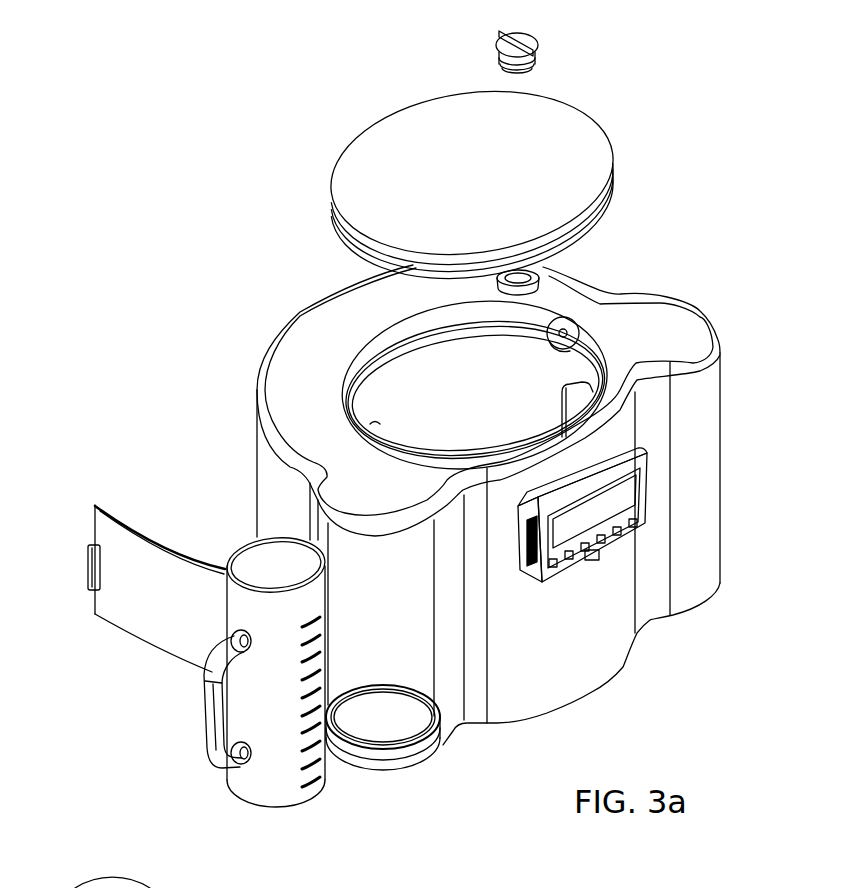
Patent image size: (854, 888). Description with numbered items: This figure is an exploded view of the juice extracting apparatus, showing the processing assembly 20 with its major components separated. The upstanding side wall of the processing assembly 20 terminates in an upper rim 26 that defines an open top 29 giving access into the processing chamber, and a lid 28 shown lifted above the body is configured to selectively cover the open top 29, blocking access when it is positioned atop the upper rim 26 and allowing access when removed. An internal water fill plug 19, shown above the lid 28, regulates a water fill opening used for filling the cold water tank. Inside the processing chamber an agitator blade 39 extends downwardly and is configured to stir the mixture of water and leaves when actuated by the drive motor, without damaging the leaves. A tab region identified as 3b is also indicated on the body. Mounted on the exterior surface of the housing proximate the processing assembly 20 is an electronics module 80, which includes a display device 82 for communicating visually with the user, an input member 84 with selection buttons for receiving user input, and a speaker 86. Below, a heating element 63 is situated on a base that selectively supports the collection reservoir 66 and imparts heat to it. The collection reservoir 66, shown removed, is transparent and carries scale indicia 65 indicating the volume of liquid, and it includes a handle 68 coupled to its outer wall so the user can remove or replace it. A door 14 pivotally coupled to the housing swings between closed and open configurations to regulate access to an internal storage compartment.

The internal water fill plug 19 is at (513, 32).
The lid 28 is at (575, 137).
The upper rim 26 is at (397, 330).
The tab / detail 3b is at (577, 322).
The processing assembly 20 is at (263, 313).
The open top 29 is at (343, 367).
The agitator blade 39 is at (575, 405).
The electronics module 80 is at (653, 591).
The display device 82 is at (632, 485).
The input member 84 is at (645, 515).
The speaker 86 is at (527, 577).
The heating element 63 is at (391, 733).
The collection reservoir 66 is at (252, 788).
The scale indicia 65 is at (307, 770).
The handle 68 is at (205, 713).
The door 14 is at (125, 618).